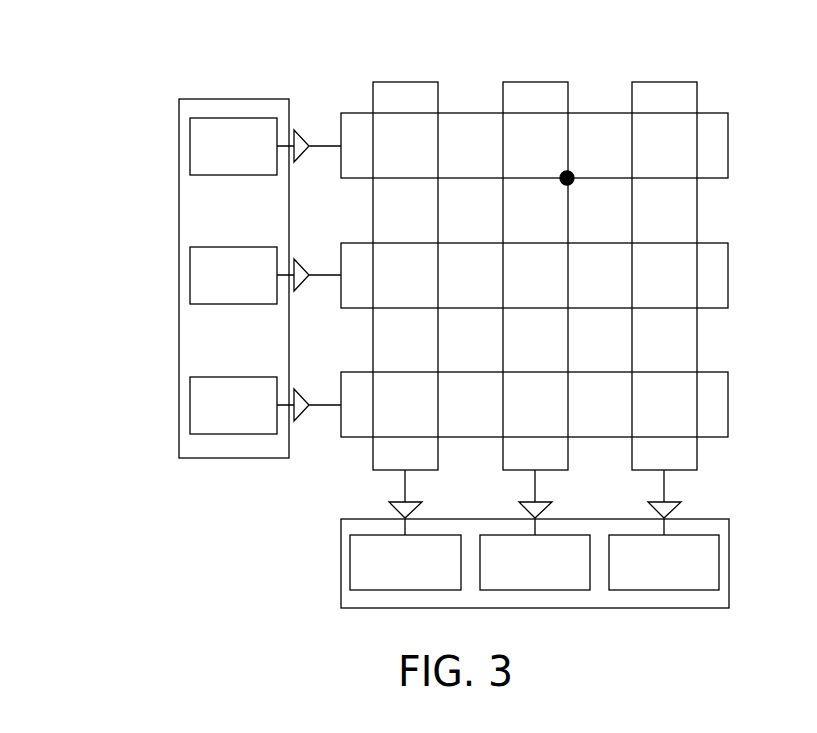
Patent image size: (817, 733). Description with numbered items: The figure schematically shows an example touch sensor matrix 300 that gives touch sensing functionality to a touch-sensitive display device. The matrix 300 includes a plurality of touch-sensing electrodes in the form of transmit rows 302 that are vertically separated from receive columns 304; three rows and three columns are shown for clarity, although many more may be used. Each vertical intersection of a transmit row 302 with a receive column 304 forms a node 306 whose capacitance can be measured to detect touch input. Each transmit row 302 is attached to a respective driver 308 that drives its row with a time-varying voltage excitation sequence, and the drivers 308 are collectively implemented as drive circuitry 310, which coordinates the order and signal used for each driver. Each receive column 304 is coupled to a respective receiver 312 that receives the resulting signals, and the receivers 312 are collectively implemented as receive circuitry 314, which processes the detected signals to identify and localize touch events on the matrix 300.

The touch sensor matrix 300 is at (143, 288).
The transmit rows 302 is at (756, 149).
The receive columns 304 is at (406, 58).
The node 306 is at (571, 184).
The driver 308 is at (265, 276).
The drive circuitry 310 is at (220, 99).
The receiver 312 is at (534, 530).
The receive circuitry 314 is at (341, 519).